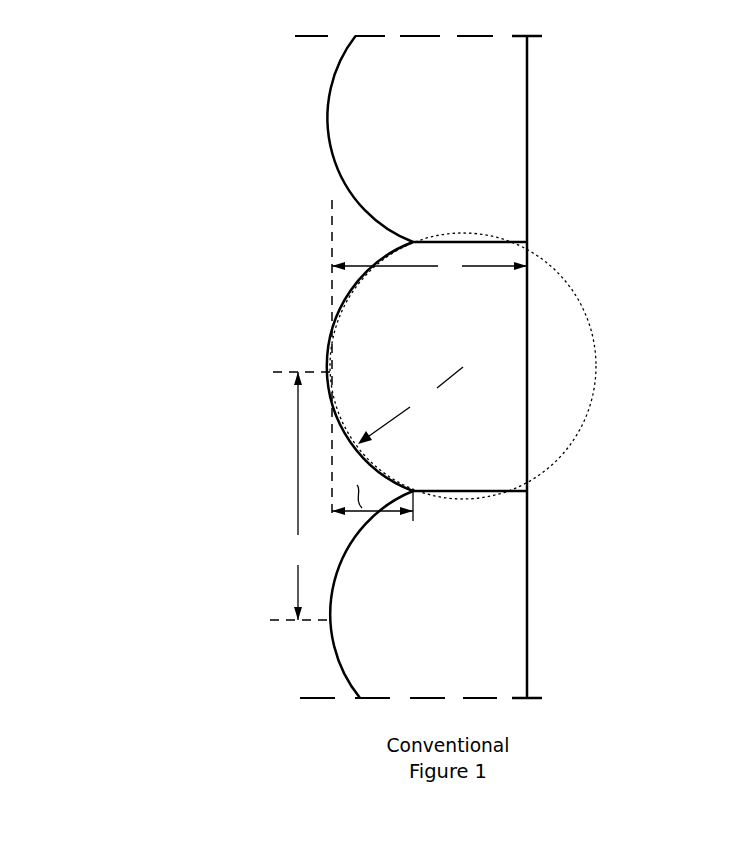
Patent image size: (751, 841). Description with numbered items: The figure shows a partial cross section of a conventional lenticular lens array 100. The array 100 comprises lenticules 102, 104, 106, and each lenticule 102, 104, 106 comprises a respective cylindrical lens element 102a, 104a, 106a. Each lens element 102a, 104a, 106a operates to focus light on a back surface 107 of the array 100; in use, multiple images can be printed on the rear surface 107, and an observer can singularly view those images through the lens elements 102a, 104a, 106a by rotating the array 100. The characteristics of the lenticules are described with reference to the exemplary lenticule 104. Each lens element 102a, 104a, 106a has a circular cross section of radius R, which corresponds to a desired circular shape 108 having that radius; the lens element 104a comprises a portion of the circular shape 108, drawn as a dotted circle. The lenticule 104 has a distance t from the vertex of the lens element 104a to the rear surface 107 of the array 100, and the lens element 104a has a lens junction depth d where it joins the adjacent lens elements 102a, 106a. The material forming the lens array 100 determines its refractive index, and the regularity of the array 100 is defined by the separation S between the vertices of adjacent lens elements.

The lenticular lens array 100 is at (82, 63).
The lenticule 102 is at (345, 106).
The cylindrical lens element 102a is at (338, 172).
The lenticule 104 is at (373, 302).
The cylindrical lens element 104a is at (330, 345).
The lenticule 106 is at (367, 660).
The cylindrical lens element 106a is at (330, 632).
The back surface 107 is at (528, 140).
The circular shape 108 is at (598, 358).